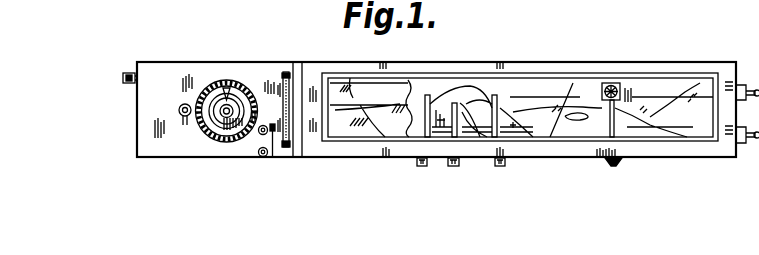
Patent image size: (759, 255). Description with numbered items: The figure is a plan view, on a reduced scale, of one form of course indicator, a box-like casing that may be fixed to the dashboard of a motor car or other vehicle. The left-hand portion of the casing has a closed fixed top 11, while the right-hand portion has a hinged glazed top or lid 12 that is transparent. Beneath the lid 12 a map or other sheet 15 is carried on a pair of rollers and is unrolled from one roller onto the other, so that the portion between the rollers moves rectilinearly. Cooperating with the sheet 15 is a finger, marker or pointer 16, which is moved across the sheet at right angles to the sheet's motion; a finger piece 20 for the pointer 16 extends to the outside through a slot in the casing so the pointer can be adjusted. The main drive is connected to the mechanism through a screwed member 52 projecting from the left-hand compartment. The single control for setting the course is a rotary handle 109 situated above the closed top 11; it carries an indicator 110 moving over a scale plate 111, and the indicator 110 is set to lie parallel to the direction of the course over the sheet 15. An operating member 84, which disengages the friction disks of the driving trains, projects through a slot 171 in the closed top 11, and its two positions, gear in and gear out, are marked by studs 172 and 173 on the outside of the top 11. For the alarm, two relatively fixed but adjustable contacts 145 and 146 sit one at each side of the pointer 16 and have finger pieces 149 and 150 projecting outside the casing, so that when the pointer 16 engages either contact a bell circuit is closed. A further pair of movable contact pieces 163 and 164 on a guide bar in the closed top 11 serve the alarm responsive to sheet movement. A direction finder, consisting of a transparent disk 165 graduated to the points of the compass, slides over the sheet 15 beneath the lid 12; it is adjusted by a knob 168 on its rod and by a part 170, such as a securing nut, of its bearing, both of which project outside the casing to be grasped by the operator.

The closed fixed top 11 is at (155, 77).
The screwed member 52 is at (108, 76).
The scale plate 111 is at (198, 102).
The indicator 110 is at (228, 94).
The rotary handle 109 is at (220, 122).
The stud 172 is at (260, 134).
The stud 173 is at (260, 155).
The operating member 84 is at (275, 131).
The slot 171 is at (273, 157).
The movable contact piece 164 is at (288, 72).
The movable contact piece 163 is at (293, 137).
The hinged glazed lid 12 is at (348, 88).
The adjustable contact 145 is at (428, 95).
The pointer 16 is at (455, 103).
The adjustable contact 146 is at (497, 95).
The sheet 15 is at (545, 98).
The disk 165 is at (611, 83).
The finger piece 149 is at (422, 166).
The finger piece 20 is at (455, 166).
The finger piece 150 is at (498, 166).
The knob 168 is at (609, 165).
The securing nut 170 is at (621, 160).